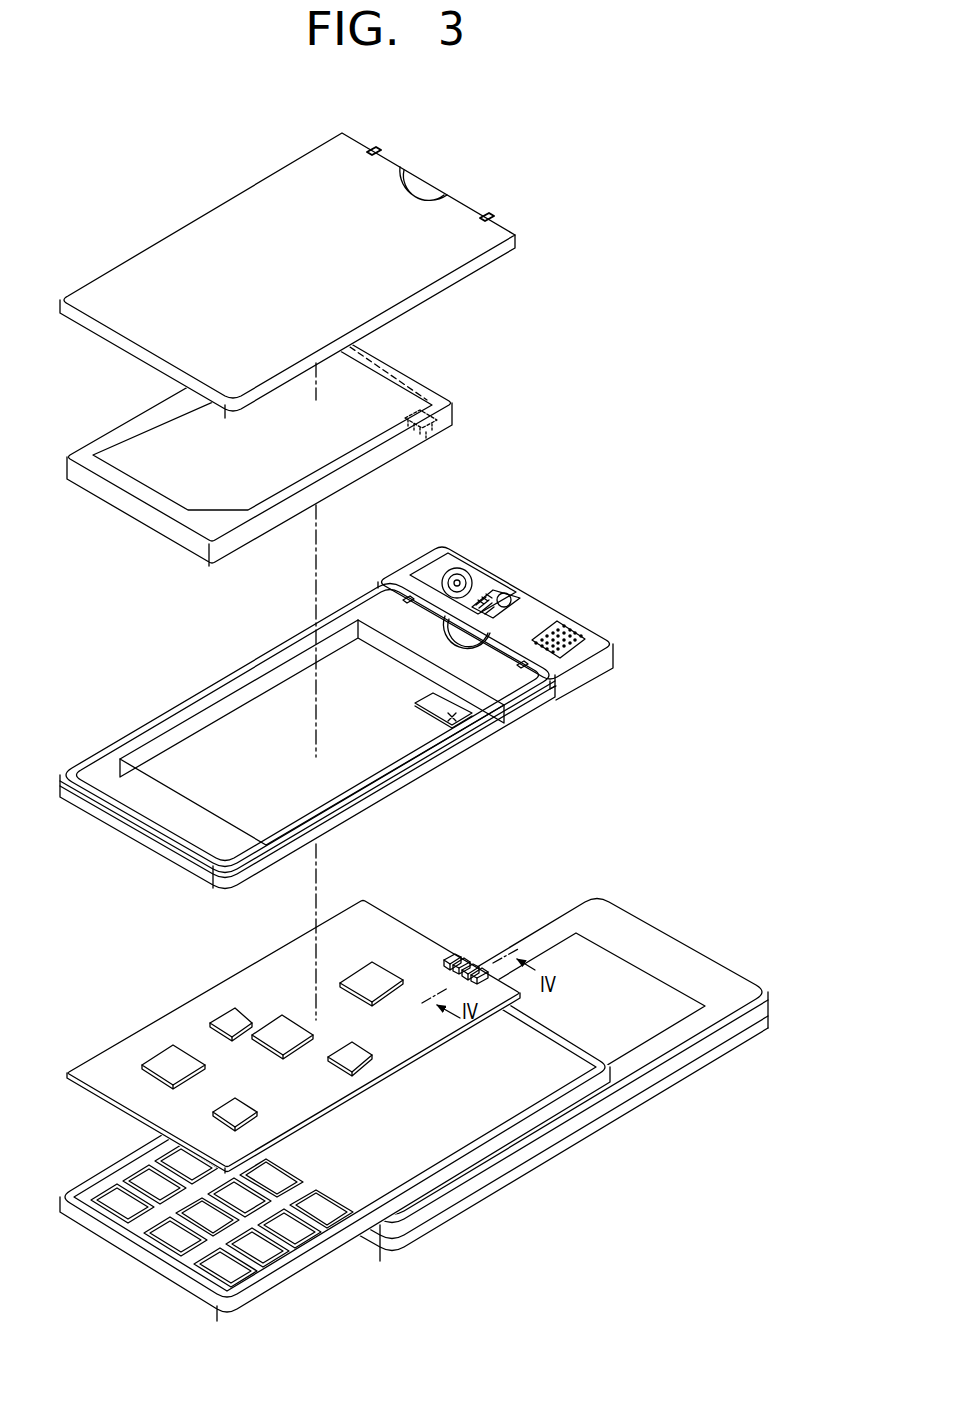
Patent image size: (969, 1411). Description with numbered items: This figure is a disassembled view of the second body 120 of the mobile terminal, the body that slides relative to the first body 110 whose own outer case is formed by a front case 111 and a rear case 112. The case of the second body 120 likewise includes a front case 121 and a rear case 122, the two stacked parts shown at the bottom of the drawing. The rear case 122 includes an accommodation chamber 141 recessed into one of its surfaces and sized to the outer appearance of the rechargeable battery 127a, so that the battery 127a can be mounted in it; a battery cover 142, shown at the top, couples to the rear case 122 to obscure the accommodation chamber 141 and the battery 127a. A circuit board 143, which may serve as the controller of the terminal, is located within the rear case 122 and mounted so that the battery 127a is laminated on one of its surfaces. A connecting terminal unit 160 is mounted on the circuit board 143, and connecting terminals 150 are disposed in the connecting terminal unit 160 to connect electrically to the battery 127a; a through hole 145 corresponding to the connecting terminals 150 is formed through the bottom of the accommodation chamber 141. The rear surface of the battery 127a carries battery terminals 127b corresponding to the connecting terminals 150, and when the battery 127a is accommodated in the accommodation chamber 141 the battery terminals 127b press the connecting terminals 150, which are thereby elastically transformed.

The first body 110 is at (497, 1067).
The front case 111 is at (628, 1105).
The rear case 112 is at (688, 1052).
The second body 120 is at (360, 698).
The front case 121 is at (307, 1257).
The rear case 122 is at (593, 635).
The rechargeable battery 127a is at (408, 392).
The battery terminals 127b is at (433, 427).
The accommodation chamber 141 is at (335, 788).
The battery cover 142 is at (453, 208).
The circuit board 143 is at (293, 1024).
The through hole 145 is at (455, 718).
The connecting terminals 150 is at (444, 946).
The connecting terminal unit 160 is at (478, 947).